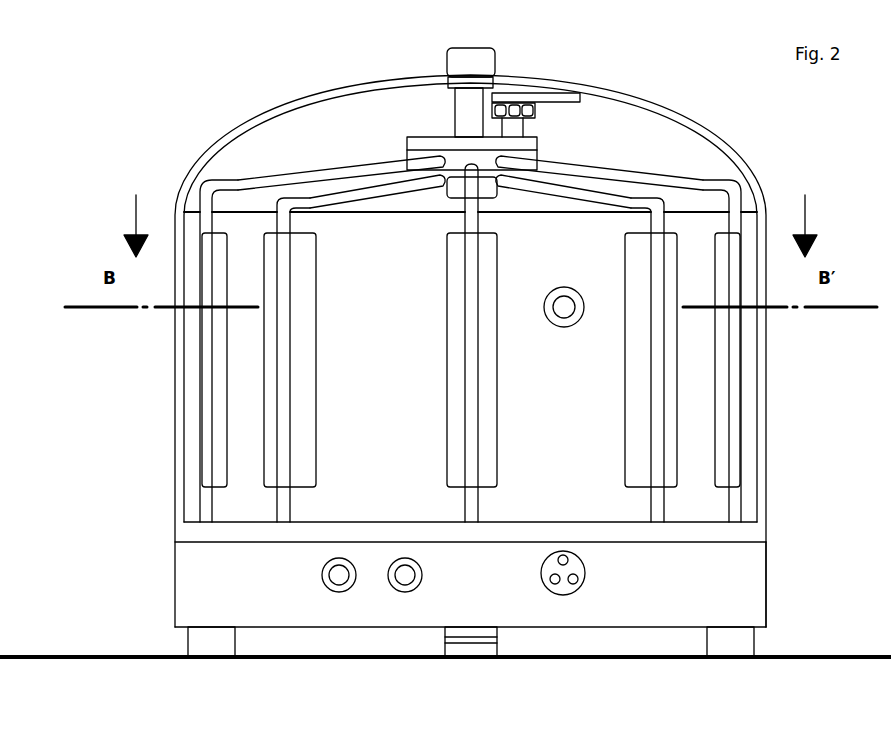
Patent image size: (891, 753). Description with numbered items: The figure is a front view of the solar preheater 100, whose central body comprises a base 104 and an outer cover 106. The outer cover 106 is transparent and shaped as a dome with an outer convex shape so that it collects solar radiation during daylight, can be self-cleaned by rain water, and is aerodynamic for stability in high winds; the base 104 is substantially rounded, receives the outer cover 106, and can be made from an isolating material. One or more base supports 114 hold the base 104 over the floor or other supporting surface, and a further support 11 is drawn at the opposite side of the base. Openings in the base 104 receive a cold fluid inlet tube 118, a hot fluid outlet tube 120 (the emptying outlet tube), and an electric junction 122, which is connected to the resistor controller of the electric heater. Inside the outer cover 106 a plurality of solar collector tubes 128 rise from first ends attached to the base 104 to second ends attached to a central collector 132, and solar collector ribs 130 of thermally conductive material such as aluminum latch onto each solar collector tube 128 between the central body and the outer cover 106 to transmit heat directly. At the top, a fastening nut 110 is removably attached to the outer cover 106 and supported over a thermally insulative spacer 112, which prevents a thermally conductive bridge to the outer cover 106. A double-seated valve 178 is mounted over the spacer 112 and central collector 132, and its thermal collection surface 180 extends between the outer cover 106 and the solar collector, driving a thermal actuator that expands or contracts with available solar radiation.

The solar preheater 100 is at (237, 103).
The outer cover 106 is at (203, 147).
The thermal collection surface 180 is at (572, 80).
The base 104 is at (730, 586).
The left foot 11 is at (210, 643).
The base support 114 is at (738, 643).
The solar collector tube 128 is at (733, 192).
The solar collector rib 130 is at (688, 177).
The spacer 112 is at (470, 118).
The central collector 132 is at (418, 157).
The fastening nut 110 is at (478, 60).
The valve 178 is at (517, 90).
The hot fluid outlet tube 120 is at (346, 592).
The cold fluid inlet tube 118 is at (406, 592).
The electric junction 122 is at (568, 580).